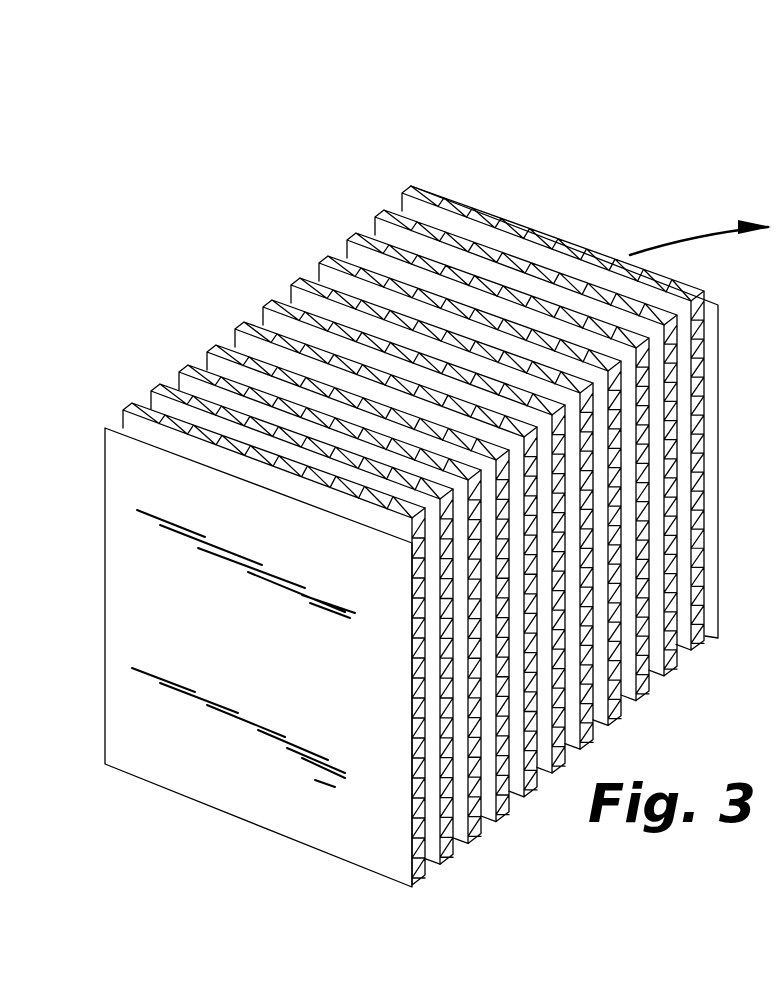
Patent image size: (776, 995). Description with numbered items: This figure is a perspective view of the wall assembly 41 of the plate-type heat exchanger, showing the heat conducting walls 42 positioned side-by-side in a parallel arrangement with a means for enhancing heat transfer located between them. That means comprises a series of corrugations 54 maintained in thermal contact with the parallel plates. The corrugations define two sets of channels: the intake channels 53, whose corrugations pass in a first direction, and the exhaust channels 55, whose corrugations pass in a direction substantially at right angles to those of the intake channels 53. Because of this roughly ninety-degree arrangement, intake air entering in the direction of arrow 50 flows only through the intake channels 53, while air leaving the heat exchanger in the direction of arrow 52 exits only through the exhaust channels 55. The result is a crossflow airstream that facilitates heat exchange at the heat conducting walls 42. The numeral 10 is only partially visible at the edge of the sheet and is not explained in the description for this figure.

The heat exchanger assembly 10 is at (7, 153).
The wall assembly 41 is at (413, 496).
The heat conducting walls 42 is at (214, 780).
The arrow 50 is at (440, 476).
The arrow 52 is at (700, 229).
The intake channels 53 is at (417, 217).
The corrugations 54 is at (187, 367).
The exhaust channels 55 is at (721, 547).